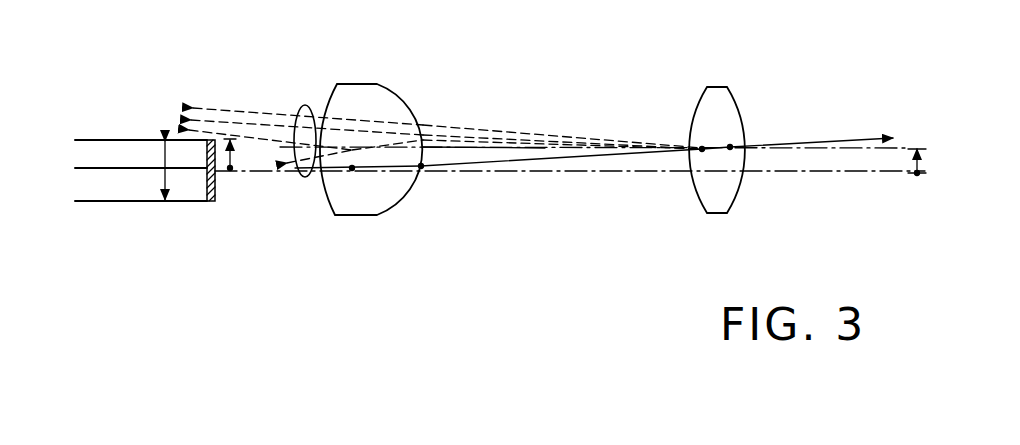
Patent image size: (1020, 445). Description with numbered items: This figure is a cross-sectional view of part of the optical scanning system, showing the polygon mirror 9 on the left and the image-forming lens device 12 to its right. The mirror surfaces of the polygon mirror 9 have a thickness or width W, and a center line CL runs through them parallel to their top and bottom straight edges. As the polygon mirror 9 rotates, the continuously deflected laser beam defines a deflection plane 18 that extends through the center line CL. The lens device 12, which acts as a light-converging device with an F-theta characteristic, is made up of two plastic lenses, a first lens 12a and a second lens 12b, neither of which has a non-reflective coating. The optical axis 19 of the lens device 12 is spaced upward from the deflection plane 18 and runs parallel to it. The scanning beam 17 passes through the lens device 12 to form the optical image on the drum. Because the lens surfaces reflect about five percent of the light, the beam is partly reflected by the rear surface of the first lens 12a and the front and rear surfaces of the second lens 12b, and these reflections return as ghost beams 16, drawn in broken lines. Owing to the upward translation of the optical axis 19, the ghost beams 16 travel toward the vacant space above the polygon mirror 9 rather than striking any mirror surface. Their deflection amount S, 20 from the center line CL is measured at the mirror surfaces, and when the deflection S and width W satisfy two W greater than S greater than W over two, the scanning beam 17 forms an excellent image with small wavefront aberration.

The polygon mirror 9 is at (103, 149).
The deflection amount 20 is at (229, 165).
The ghost beams 16 is at (304, 105).
The image-forming lens device 12 is at (532, 210).
The first lens 12a is at (393, 193).
The second lens 12b is at (713, 190).
The scanning beam 17 is at (527, 160).
The deflection plane 18 is at (837, 175).
The optical axis 19 is at (903, 140).
The width of the mirror surfaces W is at (147, 172).
The deflection amount S is at (240, 155).
The center line CL is at (188, 172).